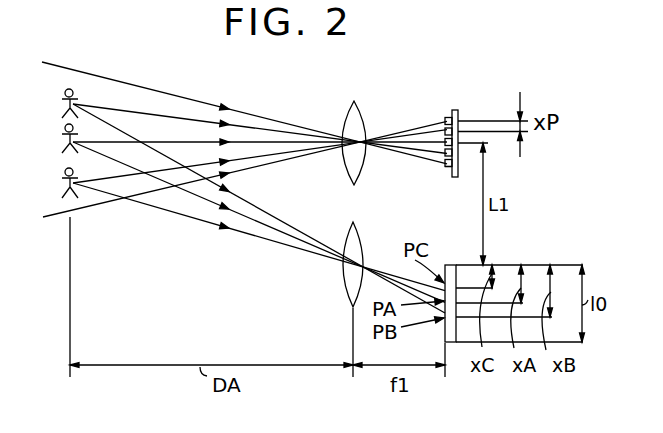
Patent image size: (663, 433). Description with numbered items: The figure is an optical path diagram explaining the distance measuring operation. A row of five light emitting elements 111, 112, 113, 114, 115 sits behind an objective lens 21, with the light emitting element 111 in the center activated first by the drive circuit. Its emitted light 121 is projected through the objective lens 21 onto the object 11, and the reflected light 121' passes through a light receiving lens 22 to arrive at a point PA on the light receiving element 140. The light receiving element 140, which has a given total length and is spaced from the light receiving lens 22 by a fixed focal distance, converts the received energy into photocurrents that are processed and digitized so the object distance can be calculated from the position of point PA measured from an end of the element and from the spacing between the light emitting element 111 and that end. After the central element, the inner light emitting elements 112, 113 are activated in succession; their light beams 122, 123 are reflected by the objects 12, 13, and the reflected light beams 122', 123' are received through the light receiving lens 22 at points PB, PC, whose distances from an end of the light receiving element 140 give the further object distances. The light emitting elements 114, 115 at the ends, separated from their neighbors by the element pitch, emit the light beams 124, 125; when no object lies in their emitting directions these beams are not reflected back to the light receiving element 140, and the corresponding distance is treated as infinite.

The object 11 is at (63, 128).
The object 12 is at (63, 93).
The object 13 is at (63, 172).
The objective lens 21 is at (349, 119).
The light receiving lens 22 is at (347, 289).
The light emitting element 111 is at (445, 155).
The light emitting element 112 is at (446, 165).
The light emitting element 113 is at (445, 119).
The light emitting element 114 is at (446, 170).
The light emitting element 115 is at (446, 128).
The emitted light 121 is at (260, 106).
The light beam 122 is at (260, 110).
The light beam 123 is at (260, 161).
The light beam 124 is at (66, 68).
The light beam 125 is at (56, 219).
The reflected light 121' is at (259, 222).
The reflected light beam 122' is at (259, 208).
The reflected light beam 123' is at (259, 237).
The light receiving element 140 is at (450, 345).